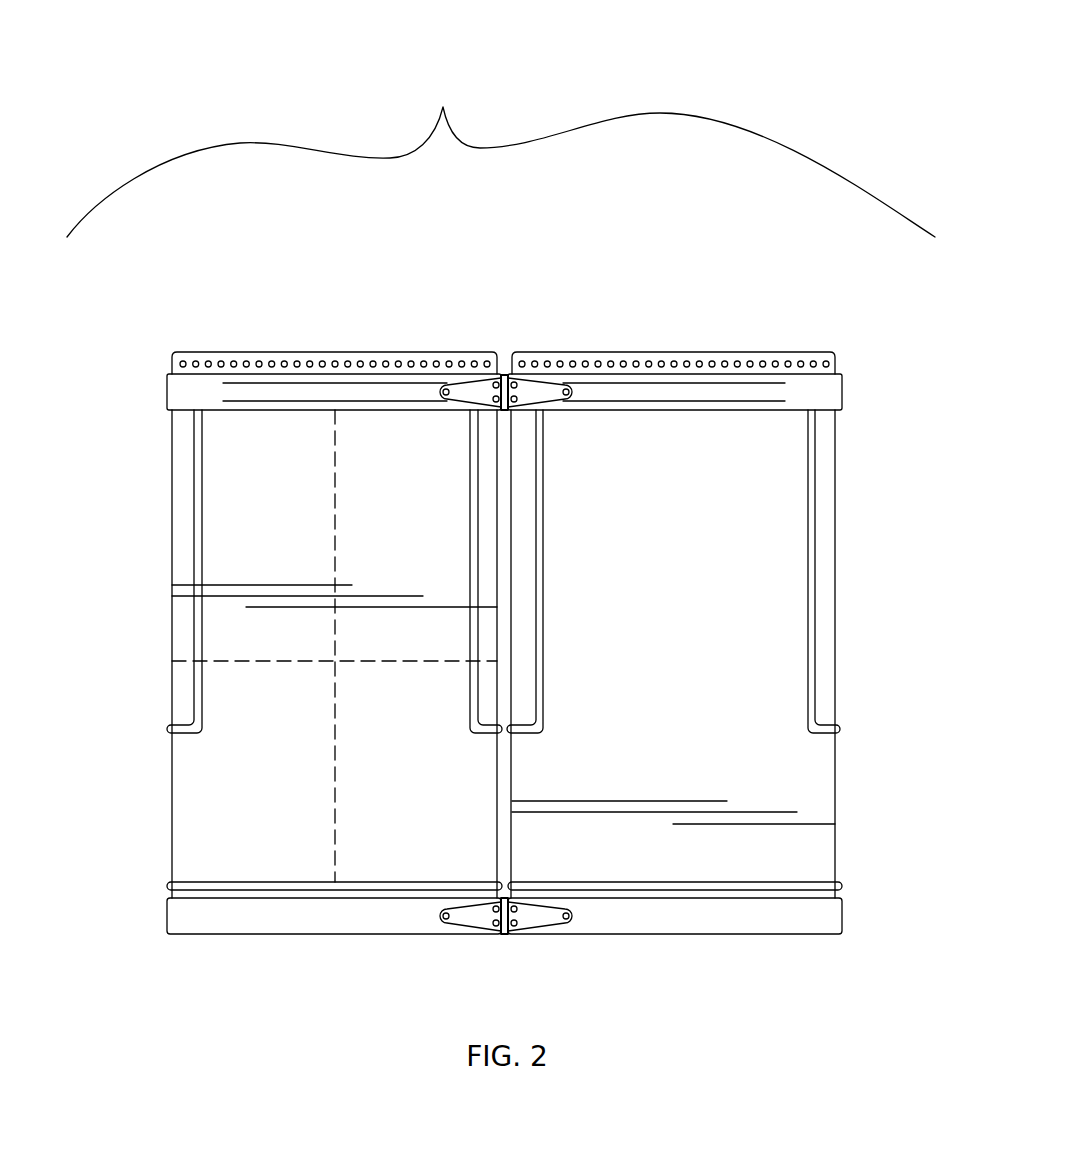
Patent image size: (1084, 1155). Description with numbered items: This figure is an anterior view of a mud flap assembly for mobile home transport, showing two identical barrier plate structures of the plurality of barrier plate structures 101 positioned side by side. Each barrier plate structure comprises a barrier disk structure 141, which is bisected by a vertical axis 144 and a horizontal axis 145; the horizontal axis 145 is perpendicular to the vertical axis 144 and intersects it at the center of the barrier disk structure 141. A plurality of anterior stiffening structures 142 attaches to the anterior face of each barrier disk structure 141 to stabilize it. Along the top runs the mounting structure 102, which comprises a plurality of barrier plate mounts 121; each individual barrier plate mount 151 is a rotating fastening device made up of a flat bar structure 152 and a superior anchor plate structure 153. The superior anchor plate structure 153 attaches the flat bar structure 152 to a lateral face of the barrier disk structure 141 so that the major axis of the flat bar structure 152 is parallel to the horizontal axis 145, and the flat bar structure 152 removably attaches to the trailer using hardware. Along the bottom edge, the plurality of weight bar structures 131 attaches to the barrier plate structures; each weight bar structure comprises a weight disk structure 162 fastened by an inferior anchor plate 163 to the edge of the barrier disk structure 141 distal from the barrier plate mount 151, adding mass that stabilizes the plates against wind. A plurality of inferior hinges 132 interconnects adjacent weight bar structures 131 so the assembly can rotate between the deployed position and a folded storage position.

The plurality of barrier plate structures 101 is at (768, 1043).
The mounting structure 102 is at (624, 82).
The plurality of barrier plate mounts 121 is at (505, 352).
The plurality of weight bar structures 131 is at (912, 855).
The plurality of inferior hinges 132 is at (542, 918).
The barrier disk structure 141 is at (230, 755).
The plurality of anterior stiffening structures 142 is at (543, 524).
The vertical axis 144 is at (335, 827).
The horizontal axis 145 is at (387, 661).
The individual barrier plate mount 151 is at (137, 226).
The flat bar structure 152 is at (243, 353).
The superior anchor plate structure 153 is at (200, 388).
The weight disk structure 162 is at (832, 930).
The inferior anchor plate 163 is at (815, 893).